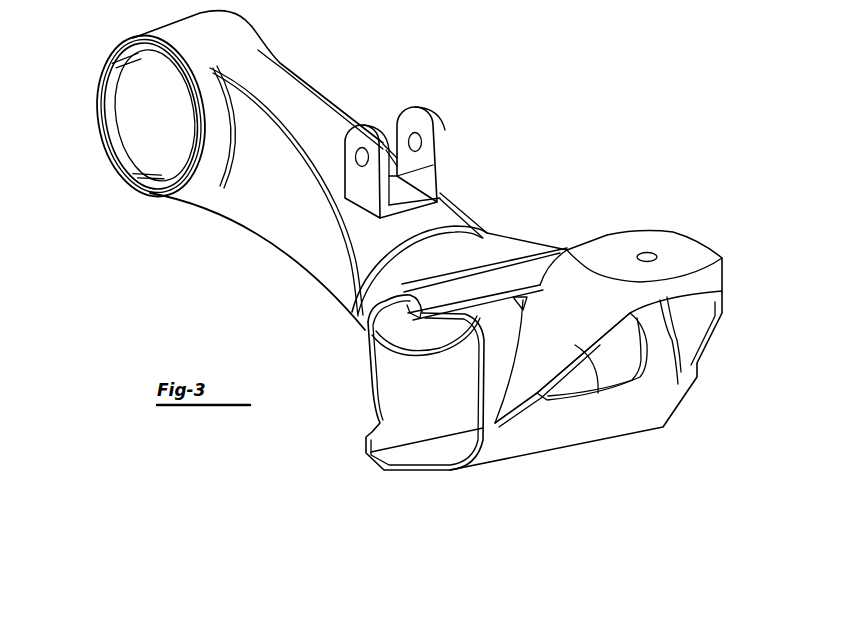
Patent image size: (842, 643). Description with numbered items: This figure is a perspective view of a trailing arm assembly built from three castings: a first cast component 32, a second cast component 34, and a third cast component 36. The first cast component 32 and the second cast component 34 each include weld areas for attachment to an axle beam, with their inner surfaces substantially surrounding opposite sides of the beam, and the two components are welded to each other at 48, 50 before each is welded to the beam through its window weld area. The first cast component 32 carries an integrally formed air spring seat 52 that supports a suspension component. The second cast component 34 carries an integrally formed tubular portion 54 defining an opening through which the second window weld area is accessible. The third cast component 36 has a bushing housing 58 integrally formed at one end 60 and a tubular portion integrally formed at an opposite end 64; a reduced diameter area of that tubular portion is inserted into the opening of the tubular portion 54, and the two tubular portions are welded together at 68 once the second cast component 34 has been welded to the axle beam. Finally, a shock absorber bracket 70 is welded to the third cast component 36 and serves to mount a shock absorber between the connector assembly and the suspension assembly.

The first cast component 32 is at (540, 432).
The second cast component 34 is at (457, 262).
The third cast component 36 is at (268, 203).
The weld 48 is at (380, 320).
The weld 50 is at (427, 450).
The air spring seat 52 is at (690, 260).
The tubular portion 54 is at (480, 243).
The bushing housing 58 is at (138, 123).
The one end 60 is at (298, 95).
The opposite end 64 is at (330, 260).
The weld 68 is at (382, 244).
The shock absorber bracket 70 is at (440, 152).